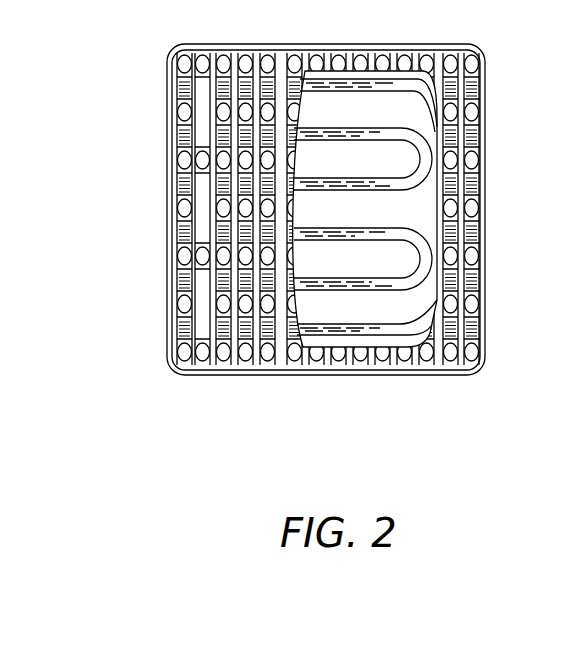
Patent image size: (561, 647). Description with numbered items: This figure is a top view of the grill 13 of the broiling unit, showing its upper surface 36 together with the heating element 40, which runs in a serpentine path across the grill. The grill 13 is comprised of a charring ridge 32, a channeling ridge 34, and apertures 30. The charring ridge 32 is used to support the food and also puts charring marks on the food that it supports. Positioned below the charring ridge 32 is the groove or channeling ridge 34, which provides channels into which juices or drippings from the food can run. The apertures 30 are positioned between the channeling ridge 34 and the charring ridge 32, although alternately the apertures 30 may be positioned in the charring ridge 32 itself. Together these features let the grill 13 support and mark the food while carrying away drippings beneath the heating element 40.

The grill 13 is at (256, 213).
The apertures 30 is at (200, 352).
The charring ridge 32 is at (192, 295).
The channeling ridge 34 is at (178, 330).
The upper surface 36 is at (172, 87).
The heating element 40 is at (307, 82).